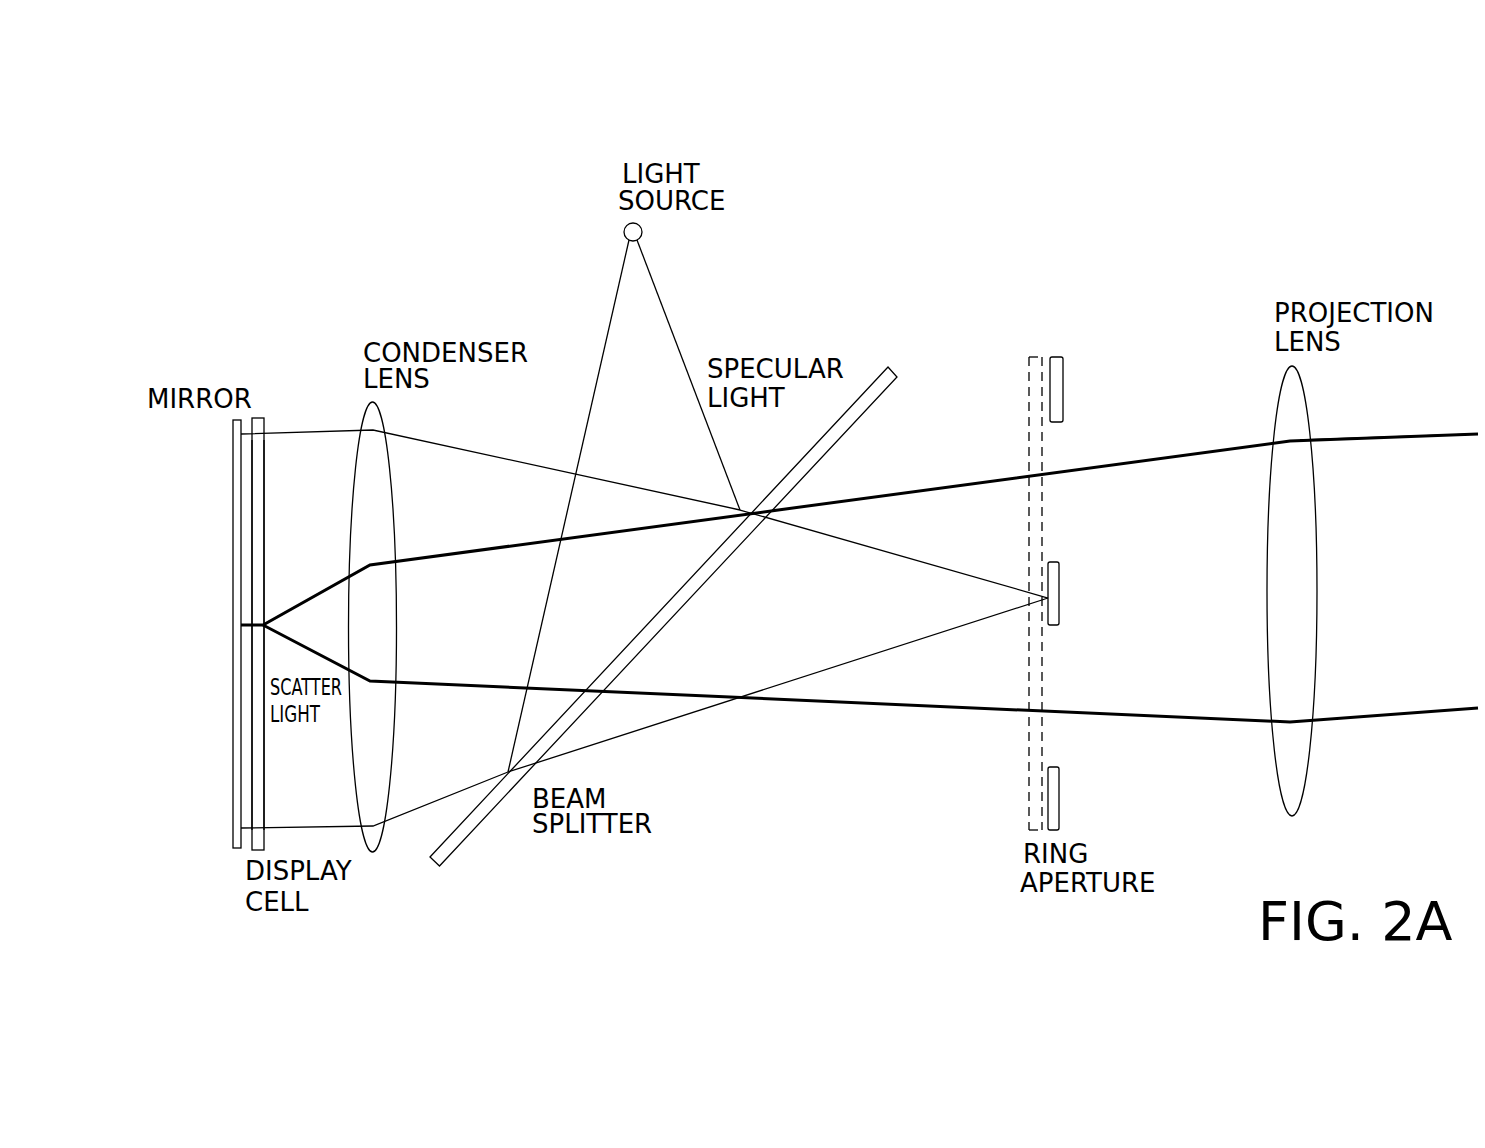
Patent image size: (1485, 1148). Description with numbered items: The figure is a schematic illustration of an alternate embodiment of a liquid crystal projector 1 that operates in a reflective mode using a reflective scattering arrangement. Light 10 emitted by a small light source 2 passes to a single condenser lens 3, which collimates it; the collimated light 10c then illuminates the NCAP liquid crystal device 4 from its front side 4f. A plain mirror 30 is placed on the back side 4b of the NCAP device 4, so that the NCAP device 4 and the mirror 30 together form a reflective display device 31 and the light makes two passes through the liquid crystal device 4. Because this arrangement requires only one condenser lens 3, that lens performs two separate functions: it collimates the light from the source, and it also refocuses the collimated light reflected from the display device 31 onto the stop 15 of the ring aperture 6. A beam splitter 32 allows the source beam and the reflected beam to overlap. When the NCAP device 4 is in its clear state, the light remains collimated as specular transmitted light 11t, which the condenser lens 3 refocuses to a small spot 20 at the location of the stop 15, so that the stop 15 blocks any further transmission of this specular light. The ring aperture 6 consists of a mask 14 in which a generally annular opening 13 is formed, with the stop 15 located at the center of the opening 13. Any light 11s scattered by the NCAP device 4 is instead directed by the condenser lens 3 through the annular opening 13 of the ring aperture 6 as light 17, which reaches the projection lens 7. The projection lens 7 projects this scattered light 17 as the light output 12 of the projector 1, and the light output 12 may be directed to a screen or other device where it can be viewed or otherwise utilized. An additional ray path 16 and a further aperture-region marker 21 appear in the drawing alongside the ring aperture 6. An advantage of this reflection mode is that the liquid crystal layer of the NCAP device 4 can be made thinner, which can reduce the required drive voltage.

The projector 1 is at (352, 224).
The light source 2 is at (643, 232).
The light 10 is at (660, 297).
The condenser lens 3 is at (397, 500).
The NCAP liquid crystal device 4 is at (257, 418).
The front side 4f is at (265, 501).
The back side 4b is at (251, 517).
The mirror 30 is at (233, 450).
The display device 31 is at (232, 395).
The collimated light 10c is at (325, 420).
The transmitted light 11t is at (313, 342).
The scattered light 11s is at (306, 598).
The beam splitter 32 is at (870, 386).
The specular light ray 16 is at (893, 650).
The light 17 is at (1195, 446).
The ring aperture 6 is at (1016, 340).
The small spot 20 is at (1035, 548).
The mask 14 is at (1050, 378).
The stop 15 is at (1060, 568).
The annular opening 13 is at (1012, 741).
The aperture opening 21 is at (1027, 818).
The projection lens 7 is at (1268, 395).
The light output 12 is at (1417, 435).